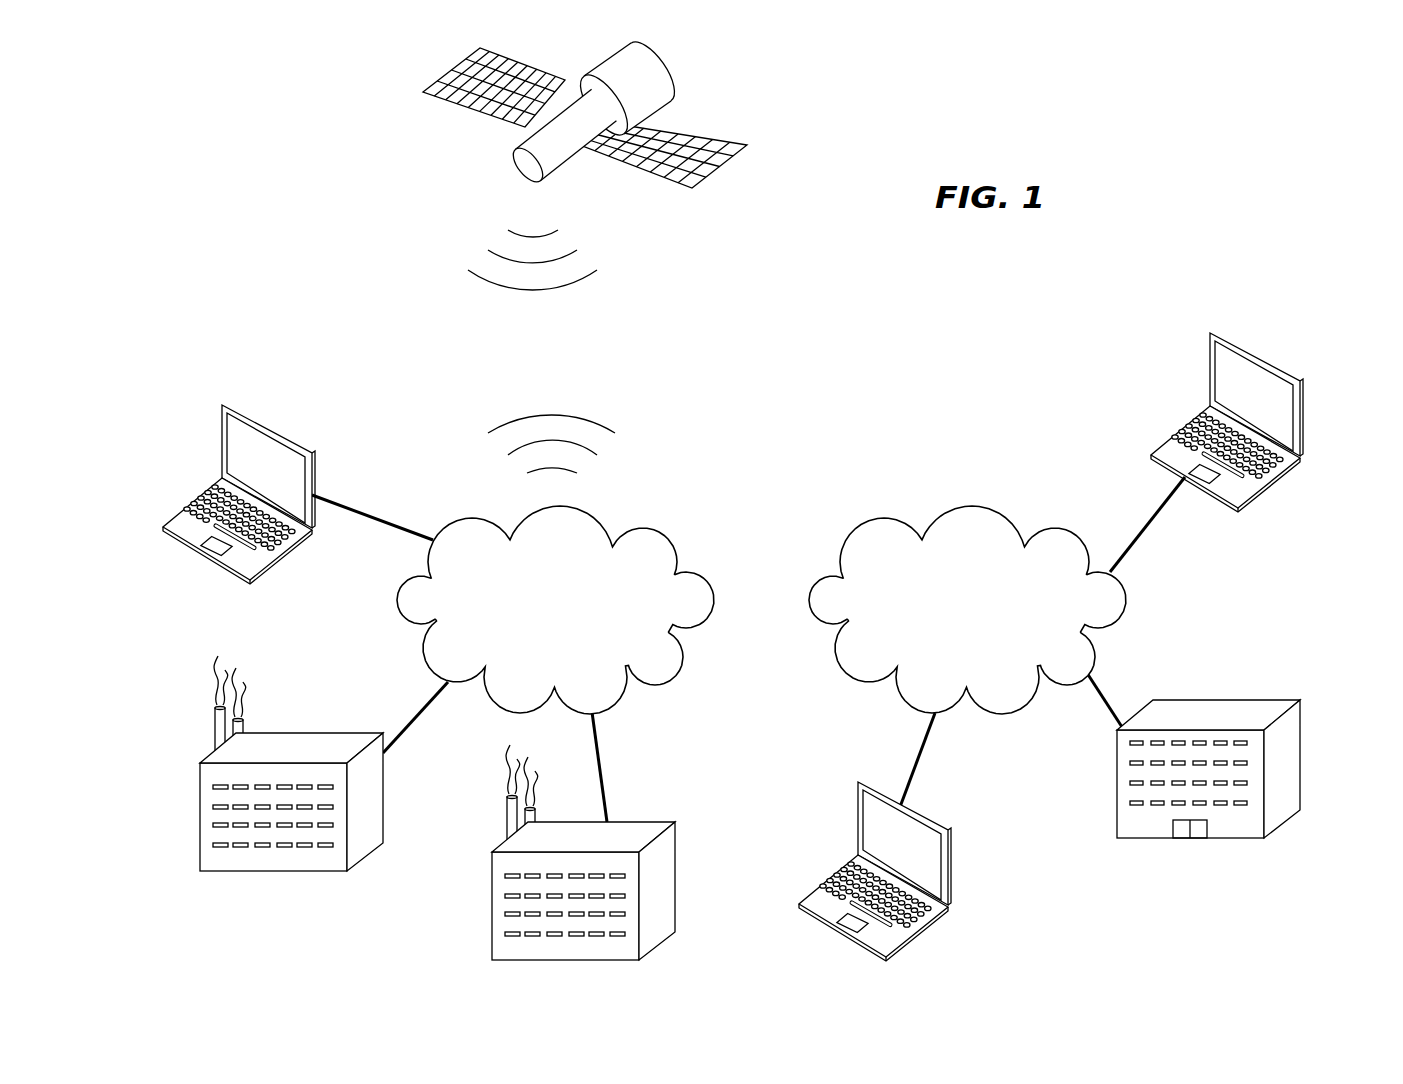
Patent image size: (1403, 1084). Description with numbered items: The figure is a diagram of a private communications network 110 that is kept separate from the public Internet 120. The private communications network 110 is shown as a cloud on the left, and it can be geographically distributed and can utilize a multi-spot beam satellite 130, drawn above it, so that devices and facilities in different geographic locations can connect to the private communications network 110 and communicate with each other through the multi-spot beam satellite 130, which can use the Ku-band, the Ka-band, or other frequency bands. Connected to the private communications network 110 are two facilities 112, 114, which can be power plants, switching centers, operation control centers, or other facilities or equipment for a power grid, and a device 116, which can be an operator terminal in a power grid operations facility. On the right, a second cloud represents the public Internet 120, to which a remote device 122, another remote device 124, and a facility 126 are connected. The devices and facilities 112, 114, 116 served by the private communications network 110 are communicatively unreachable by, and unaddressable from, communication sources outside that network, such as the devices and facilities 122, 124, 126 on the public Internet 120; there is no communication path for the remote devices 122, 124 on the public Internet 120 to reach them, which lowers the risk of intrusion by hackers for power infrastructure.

The private communications network 110 is at (538, 652).
The facility 112 is at (200, 808).
The facility 114 is at (492, 897).
The device 116 is at (222, 446).
The public Internet 120 is at (952, 641).
The remote device 122 is at (858, 825).
The remote device 124 is at (1210, 378).
The facility 126 is at (1300, 740).
The multi-spot beam satellite 130 is at (677, 88).